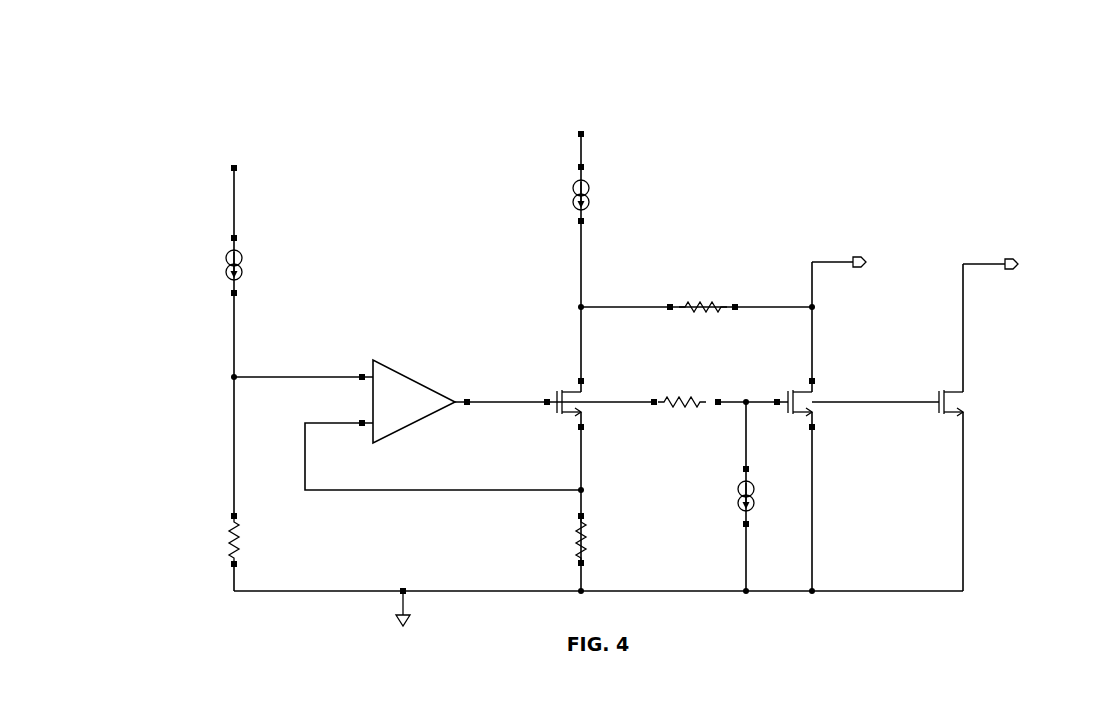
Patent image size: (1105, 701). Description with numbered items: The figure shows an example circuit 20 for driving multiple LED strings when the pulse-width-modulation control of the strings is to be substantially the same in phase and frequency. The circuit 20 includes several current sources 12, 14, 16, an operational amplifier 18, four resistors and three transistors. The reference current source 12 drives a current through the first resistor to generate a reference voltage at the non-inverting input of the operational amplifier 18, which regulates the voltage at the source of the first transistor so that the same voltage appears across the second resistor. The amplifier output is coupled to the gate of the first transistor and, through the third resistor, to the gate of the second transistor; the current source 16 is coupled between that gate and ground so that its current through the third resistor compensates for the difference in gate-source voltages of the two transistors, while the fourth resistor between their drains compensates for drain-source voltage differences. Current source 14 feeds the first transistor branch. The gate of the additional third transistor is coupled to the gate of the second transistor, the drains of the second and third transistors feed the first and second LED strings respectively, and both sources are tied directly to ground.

The circuit 20 is at (294, 46).
The reference current source 12 is at (242, 266).
The current source 14 is at (576, 191).
The current source 16 is at (742, 494).
The operational amplifier 18 is at (416, 378).